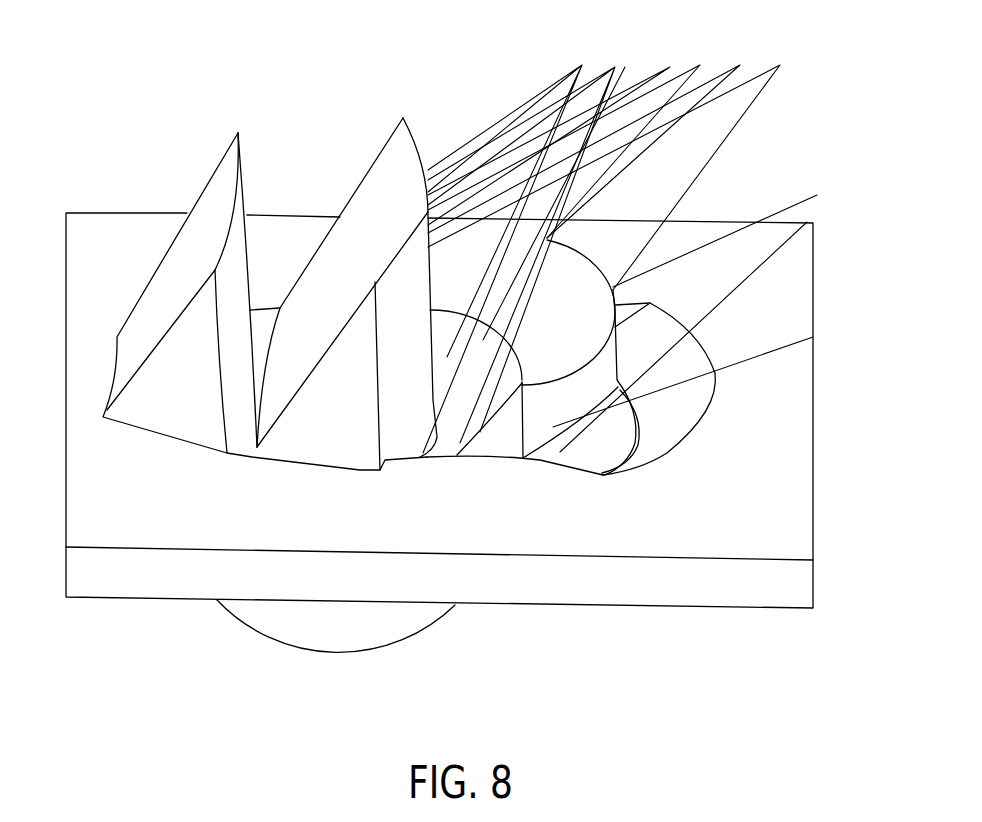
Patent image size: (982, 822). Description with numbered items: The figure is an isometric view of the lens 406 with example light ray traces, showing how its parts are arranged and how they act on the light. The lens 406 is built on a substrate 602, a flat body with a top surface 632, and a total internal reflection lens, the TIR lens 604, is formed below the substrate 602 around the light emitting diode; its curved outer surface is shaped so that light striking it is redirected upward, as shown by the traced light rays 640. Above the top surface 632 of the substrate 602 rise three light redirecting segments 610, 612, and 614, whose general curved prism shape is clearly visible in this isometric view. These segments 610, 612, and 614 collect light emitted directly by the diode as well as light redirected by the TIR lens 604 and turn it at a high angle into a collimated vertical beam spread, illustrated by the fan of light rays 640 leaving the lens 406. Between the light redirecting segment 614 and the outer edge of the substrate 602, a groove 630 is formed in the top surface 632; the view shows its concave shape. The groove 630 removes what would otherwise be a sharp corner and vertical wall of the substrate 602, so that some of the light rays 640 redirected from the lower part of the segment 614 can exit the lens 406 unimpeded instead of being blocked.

The lens 406 is at (111, 118).
The substrate 602 is at (815, 418).
The TIR lens 604 is at (288, 637).
The light redirecting segment 610 is at (238, 133).
The light redirecting segment 612 is at (403, 118).
The light redirecting segment 614 is at (550, 240).
The groove 630 is at (647, 417).
The top surface 632 is at (800, 280).
The light rays 640 is at (796, 108).